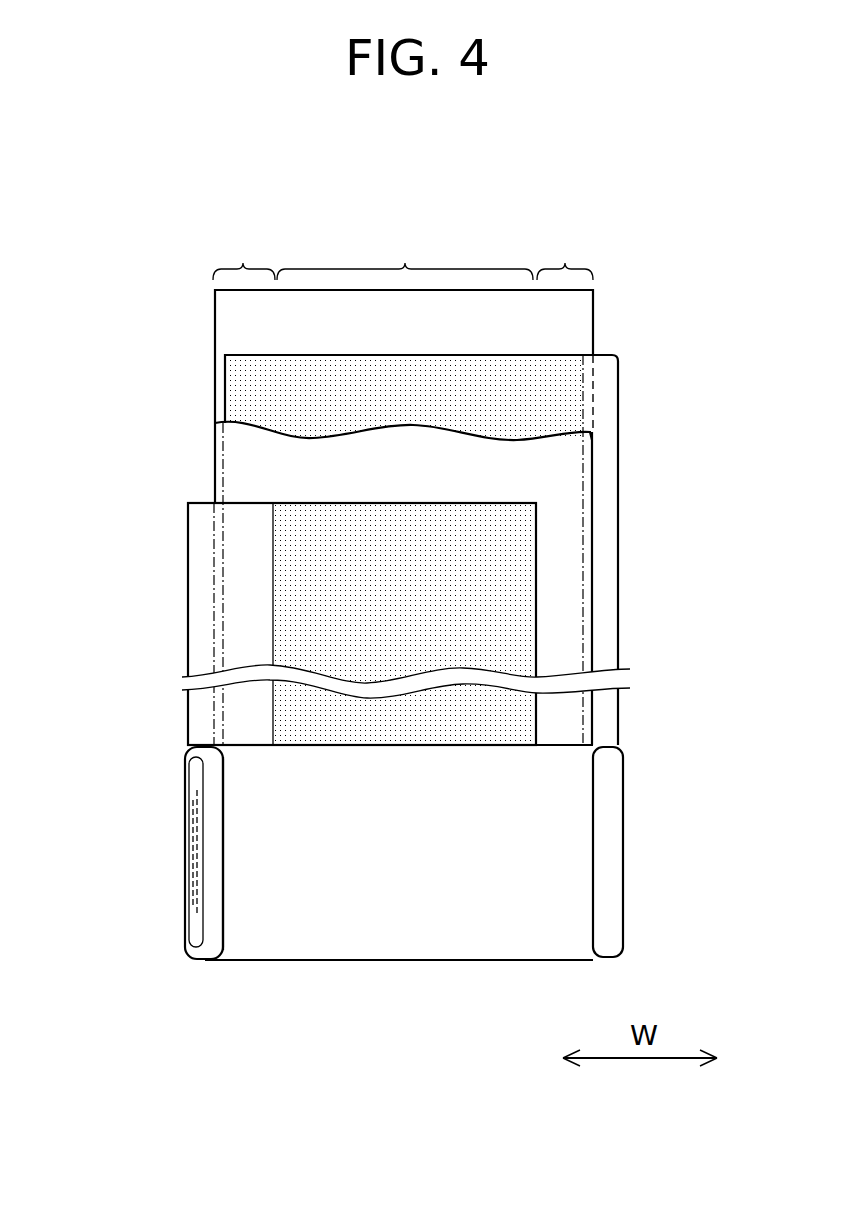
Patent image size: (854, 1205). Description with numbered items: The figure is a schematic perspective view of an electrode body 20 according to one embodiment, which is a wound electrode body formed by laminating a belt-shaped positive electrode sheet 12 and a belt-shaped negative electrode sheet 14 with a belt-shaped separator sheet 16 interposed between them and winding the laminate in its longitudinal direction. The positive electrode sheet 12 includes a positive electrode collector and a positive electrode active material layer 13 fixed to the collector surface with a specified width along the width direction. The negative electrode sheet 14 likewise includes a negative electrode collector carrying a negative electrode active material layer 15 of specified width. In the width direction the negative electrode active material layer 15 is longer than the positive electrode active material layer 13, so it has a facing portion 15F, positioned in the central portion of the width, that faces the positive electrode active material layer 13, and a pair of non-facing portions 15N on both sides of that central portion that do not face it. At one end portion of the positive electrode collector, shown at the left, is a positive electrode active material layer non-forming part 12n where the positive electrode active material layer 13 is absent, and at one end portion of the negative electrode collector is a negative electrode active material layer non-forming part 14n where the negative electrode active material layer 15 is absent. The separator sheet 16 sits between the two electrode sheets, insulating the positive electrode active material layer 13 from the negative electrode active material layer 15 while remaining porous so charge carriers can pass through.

The positive electrode sheet 12 is at (187, 585).
The positive electrode active material layer non-forming part 12n is at (207, 627).
The positive electrode active material layer 13 is at (287, 548).
The negative electrode sheet 14 is at (618, 440).
The negative electrode active material layer non-forming part 14n is at (603, 522).
The negative electrode active material layer 15 is at (572, 383).
The non-facing portions 15N is at (403, 252).
The facing portion 15F is at (405, 252).
The separator sheet 16 is at (240, 316).
The electrode body 20 is at (472, 937).